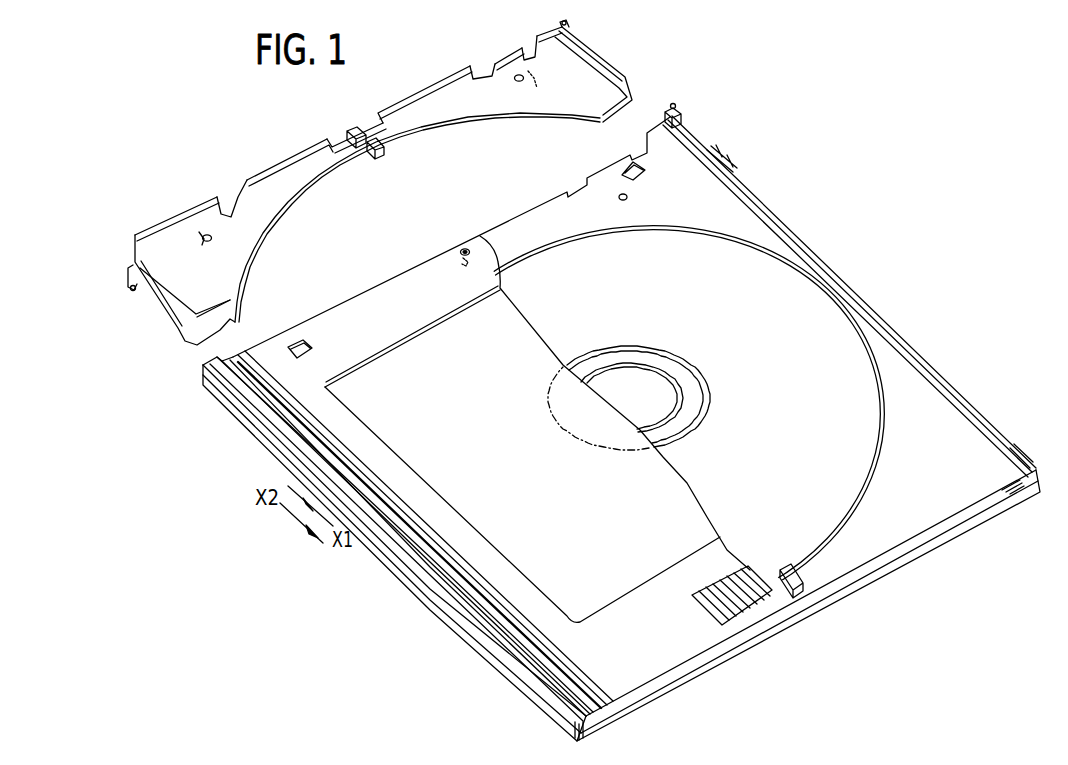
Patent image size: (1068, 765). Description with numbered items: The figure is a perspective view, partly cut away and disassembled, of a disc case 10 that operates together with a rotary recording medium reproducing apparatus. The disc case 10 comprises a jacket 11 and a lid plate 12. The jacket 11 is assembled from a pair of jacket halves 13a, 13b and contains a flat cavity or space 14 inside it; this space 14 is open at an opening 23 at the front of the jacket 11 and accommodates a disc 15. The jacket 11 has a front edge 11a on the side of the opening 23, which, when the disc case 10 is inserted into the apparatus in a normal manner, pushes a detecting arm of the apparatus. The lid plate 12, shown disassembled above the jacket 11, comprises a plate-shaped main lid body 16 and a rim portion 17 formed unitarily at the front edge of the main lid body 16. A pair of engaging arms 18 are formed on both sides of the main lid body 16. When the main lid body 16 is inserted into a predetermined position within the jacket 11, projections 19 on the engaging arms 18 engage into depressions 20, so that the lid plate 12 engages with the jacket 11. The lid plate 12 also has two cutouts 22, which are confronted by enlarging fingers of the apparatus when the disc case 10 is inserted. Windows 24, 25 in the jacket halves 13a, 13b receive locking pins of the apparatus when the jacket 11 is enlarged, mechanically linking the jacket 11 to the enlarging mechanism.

The disc case 10 is at (719, 112).
The jacket 11 is at (410, 587).
The front edge 11a is at (387, 272).
The lid plate 12 is at (268, 166).
The jacket half 13a is at (748, 633).
The jacket half 13b is at (940, 541).
The flat cavity or space 14 is at (945, 408).
The disc 15 is at (862, 457).
The main lid body 16 is at (417, 217).
The rim portion 17 is at (393, 108).
The engaging arms 18 is at (160, 310).
The projections 19 is at (130, 290).
The depressions 20 is at (690, 138).
The cutouts 22 is at (226, 203).
The opening 23 is at (485, 228).
The window 24 is at (460, 250).
The window 25 is at (462, 259).